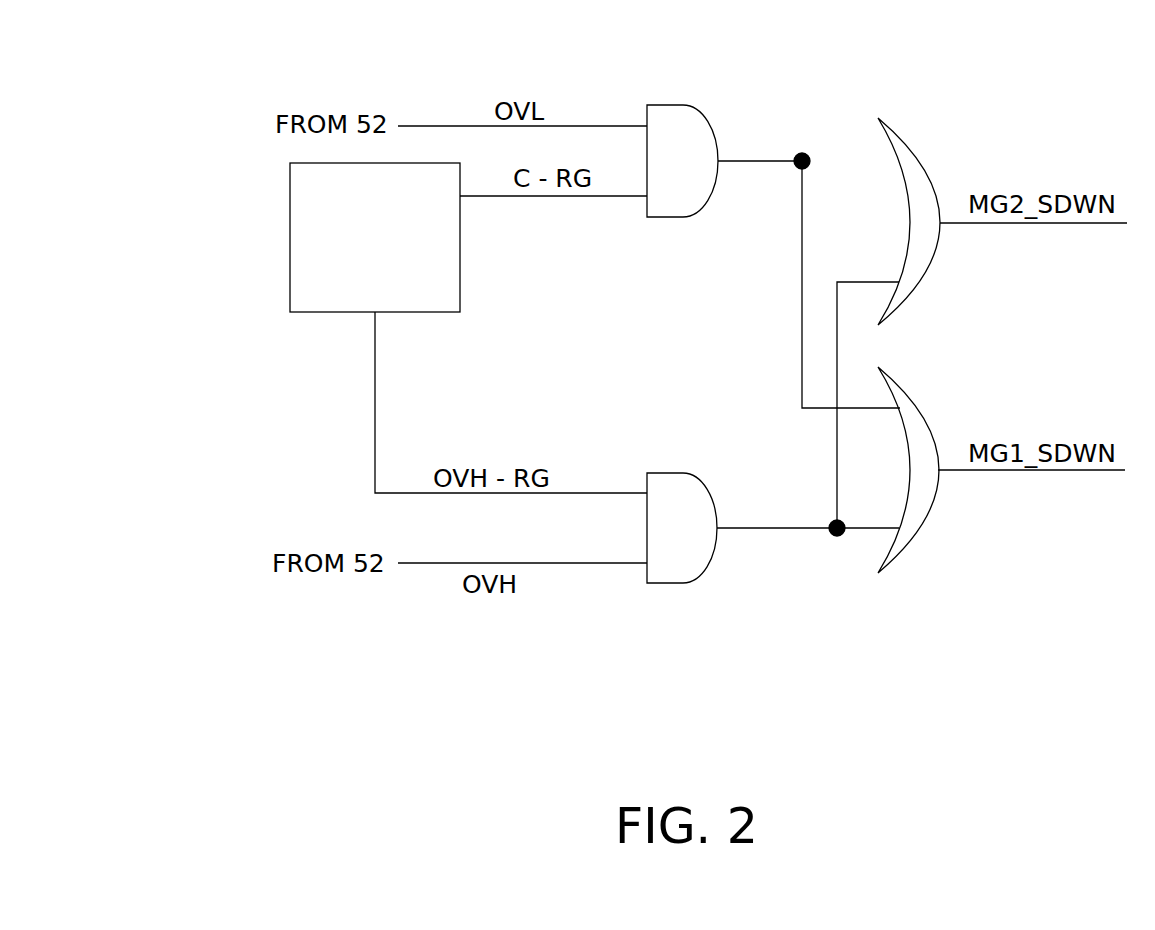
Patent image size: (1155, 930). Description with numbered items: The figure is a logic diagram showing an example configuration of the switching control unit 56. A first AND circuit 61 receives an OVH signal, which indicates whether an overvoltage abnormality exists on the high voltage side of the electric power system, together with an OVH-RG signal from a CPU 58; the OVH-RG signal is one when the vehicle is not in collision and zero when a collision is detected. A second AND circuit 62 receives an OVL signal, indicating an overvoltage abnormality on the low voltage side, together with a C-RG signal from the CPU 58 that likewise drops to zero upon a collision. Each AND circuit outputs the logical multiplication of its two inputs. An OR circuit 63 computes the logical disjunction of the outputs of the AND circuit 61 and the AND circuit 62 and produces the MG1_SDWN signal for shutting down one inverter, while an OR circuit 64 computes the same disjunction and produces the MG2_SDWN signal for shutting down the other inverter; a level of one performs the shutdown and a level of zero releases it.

The switching control unit 56 is at (807, 605).
The CPU 58 is at (290, 240).
The AND circuit 61 is at (683, 585).
The AND circuit 62 is at (683, 105).
The OR circuit 63 is at (934, 510).
The OR circuit 64 is at (936, 262).